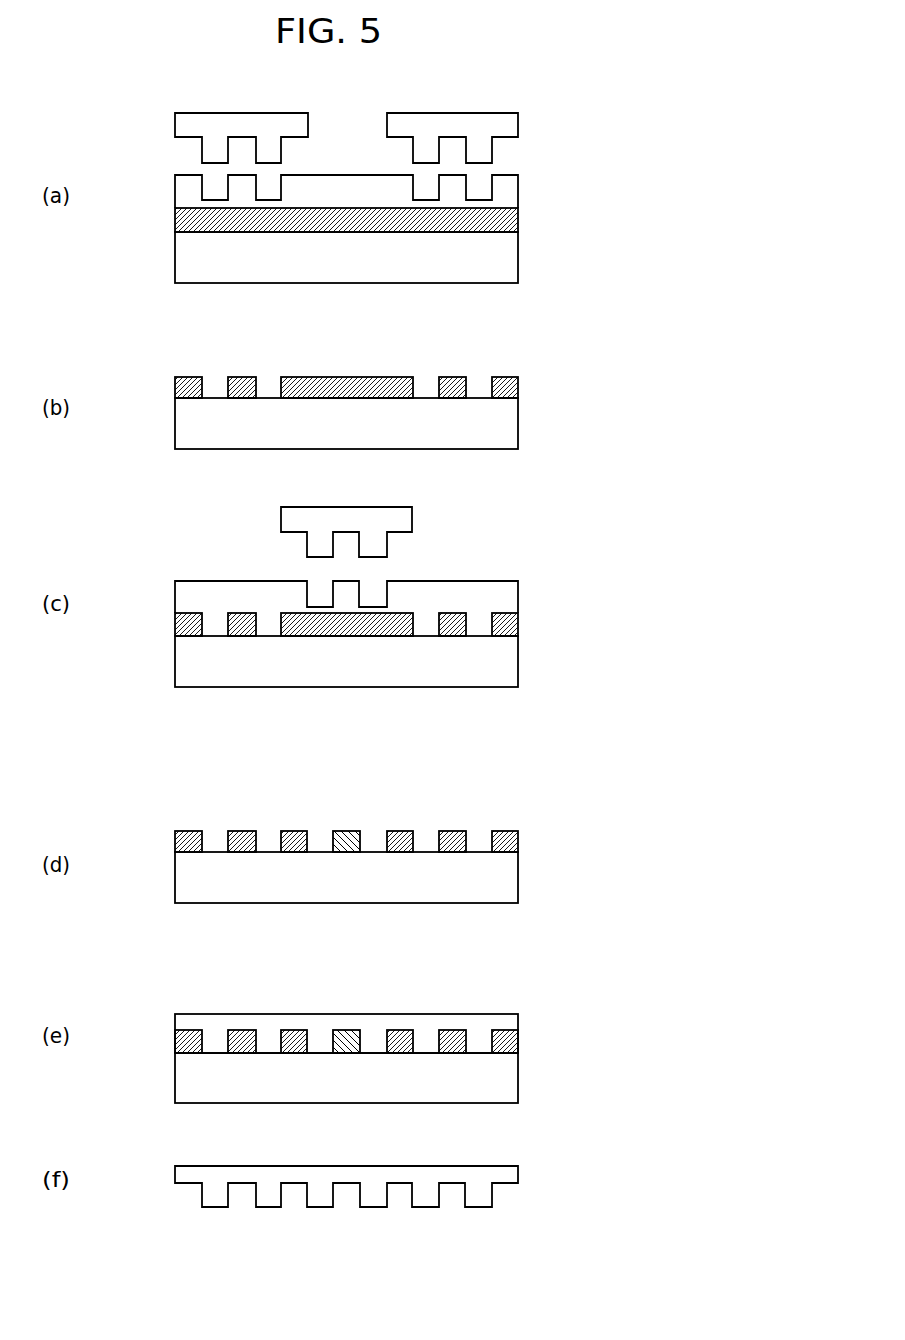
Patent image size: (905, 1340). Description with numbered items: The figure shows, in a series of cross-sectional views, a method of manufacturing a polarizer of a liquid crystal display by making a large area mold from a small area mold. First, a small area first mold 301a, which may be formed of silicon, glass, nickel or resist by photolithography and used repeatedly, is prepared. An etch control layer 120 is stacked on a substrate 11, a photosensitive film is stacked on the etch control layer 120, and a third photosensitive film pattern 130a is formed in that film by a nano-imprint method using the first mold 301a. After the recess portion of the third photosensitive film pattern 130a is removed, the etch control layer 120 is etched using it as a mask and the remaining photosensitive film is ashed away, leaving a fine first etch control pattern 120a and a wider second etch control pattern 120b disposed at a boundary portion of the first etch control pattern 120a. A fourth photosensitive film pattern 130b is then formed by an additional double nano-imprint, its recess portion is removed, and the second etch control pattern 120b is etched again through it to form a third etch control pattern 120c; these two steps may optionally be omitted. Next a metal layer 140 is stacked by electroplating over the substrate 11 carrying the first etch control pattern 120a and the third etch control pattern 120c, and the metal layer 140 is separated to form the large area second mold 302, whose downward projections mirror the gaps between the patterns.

The substrate 11 is at (507, 255).
The etch control layer 120 is at (512, 217).
The first etch control pattern 120a is at (189, 386).
The second etch control pattern 120b is at (339, 388).
The third etch control pattern 120c is at (346, 836).
The third photosensitive film pattern 130a is at (507, 192).
The fourth photosensitive film pattern 130b is at (507, 597).
The metal layer 140 is at (425, 1022).
The first mold 301a is at (507, 125).
The second mold 302 is at (507, 1176).